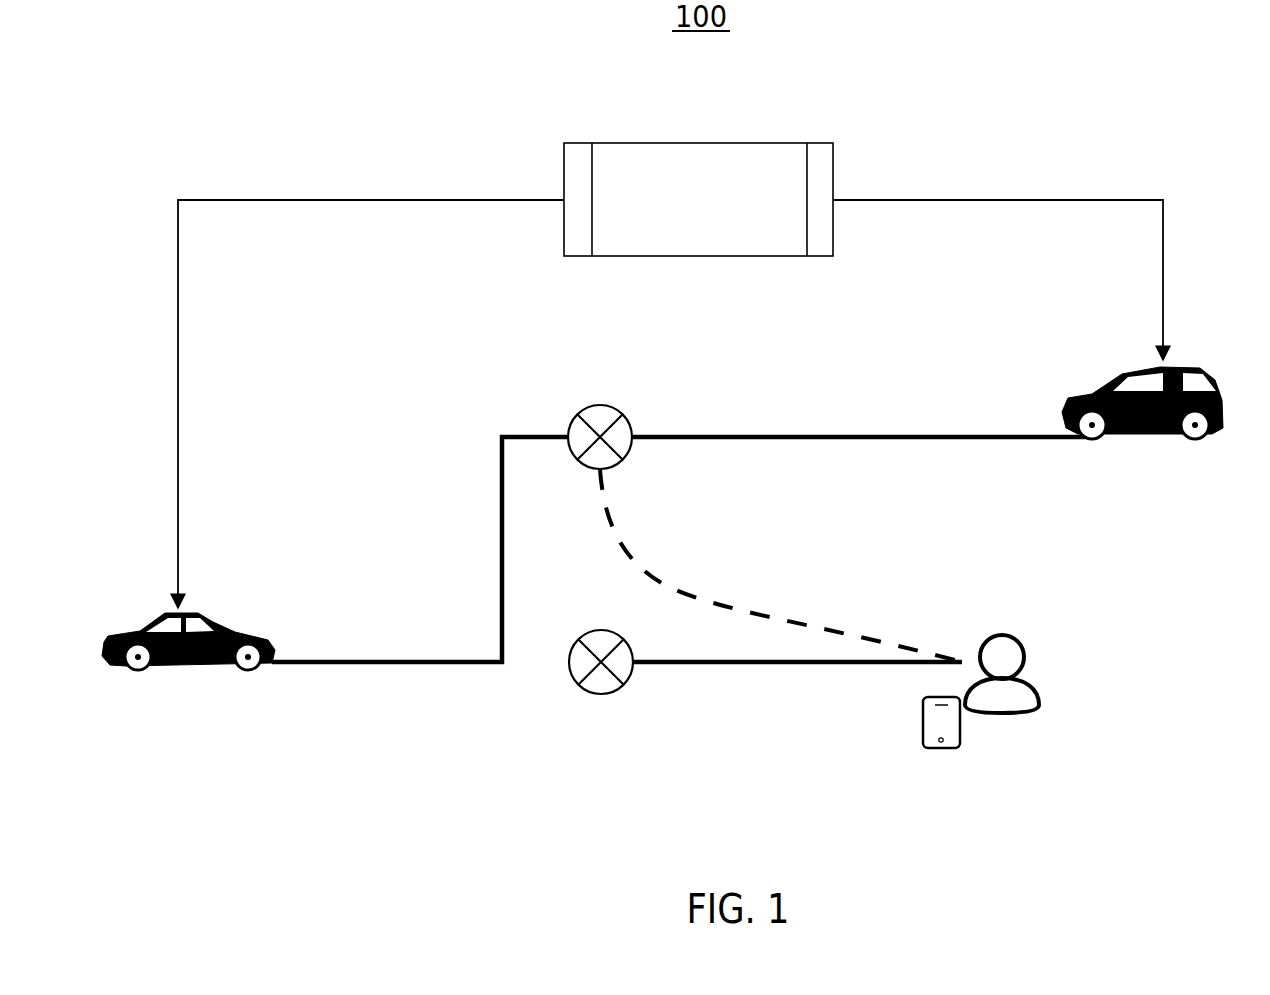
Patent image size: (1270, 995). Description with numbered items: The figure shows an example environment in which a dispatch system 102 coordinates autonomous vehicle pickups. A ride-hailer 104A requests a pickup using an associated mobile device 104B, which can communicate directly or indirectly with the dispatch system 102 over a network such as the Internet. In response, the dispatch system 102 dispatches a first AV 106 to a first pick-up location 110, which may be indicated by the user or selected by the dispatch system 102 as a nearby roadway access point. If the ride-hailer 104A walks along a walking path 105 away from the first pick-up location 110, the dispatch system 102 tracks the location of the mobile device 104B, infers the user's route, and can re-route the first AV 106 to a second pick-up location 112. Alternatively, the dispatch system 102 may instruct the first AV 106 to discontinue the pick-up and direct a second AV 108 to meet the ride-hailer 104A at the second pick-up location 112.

The dispatch system 102 is at (698, 199).
The ride-hailer 104A is at (1000, 717).
The mobile device 104B is at (920, 718).
The walking path 105 is at (718, 598).
The first AV 106 is at (192, 670).
The second AV 108 is at (1215, 437).
The first pick-up location 110 is at (619, 692).
The second pick-up location 112 is at (600, 402).